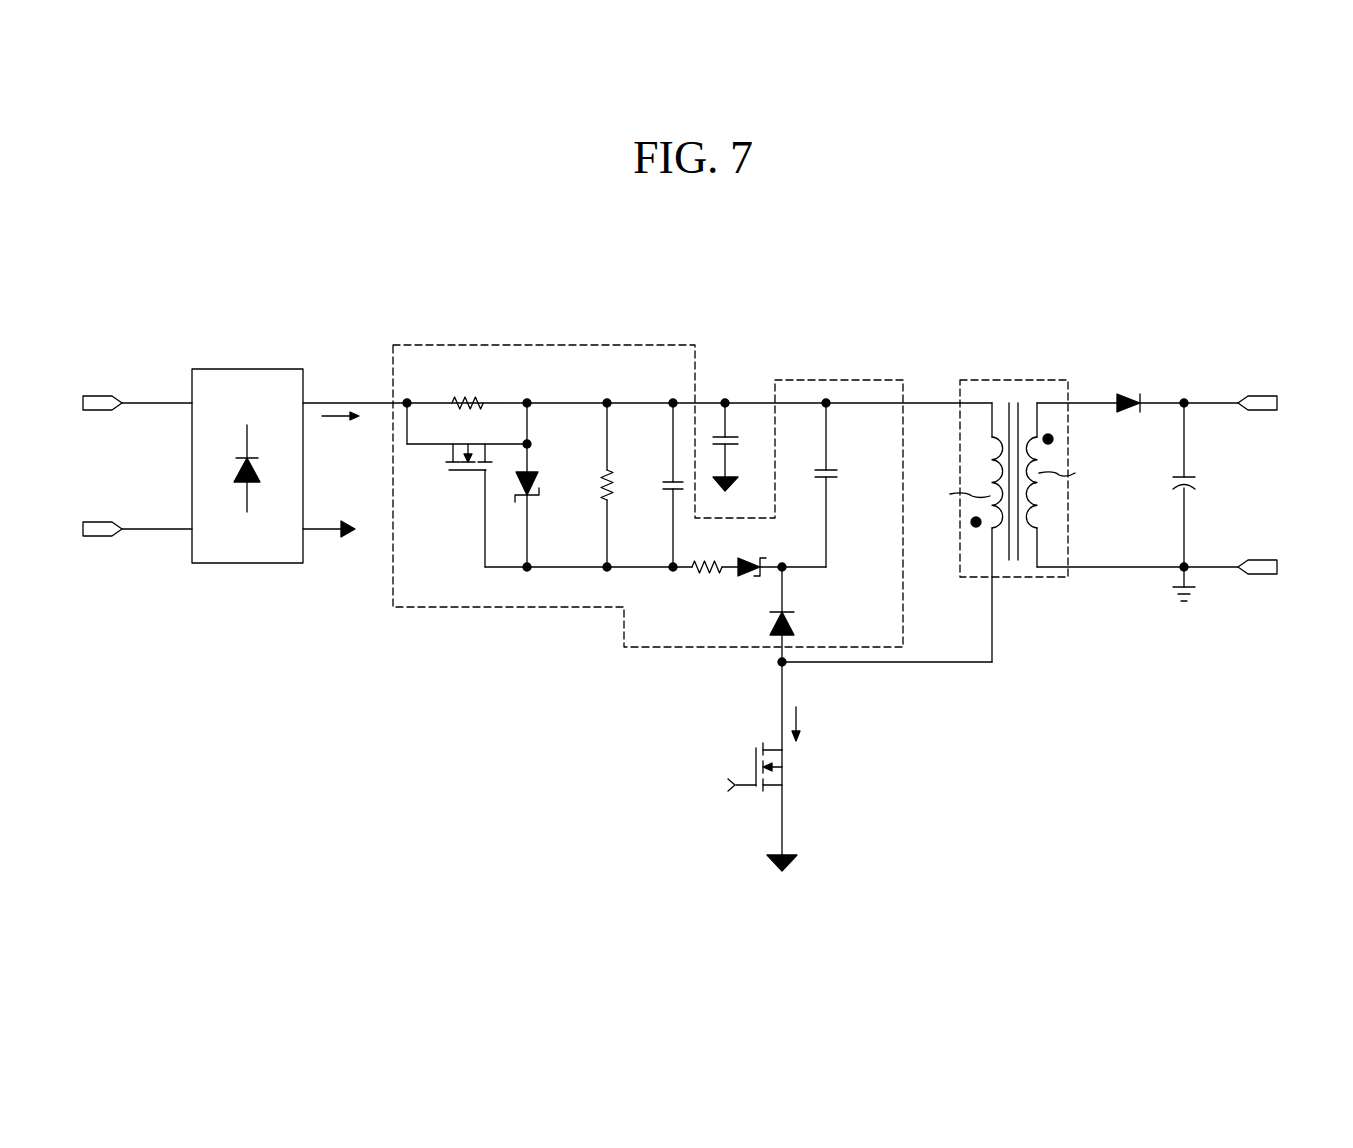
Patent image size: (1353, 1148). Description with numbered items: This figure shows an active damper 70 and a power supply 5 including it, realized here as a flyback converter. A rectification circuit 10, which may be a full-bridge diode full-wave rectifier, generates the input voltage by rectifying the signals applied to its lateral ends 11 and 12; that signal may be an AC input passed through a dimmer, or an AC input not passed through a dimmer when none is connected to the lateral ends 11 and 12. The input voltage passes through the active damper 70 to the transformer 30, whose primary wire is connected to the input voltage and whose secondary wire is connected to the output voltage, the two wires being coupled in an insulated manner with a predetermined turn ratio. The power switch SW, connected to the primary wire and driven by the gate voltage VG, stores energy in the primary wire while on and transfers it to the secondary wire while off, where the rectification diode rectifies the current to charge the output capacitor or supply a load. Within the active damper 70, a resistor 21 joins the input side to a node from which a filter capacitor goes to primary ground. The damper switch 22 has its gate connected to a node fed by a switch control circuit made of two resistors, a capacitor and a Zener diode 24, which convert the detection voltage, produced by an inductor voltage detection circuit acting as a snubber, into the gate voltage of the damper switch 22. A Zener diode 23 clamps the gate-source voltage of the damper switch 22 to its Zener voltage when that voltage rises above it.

The power supply 5 is at (865, 311).
The rectification circuit 10 is at (250, 369).
The lateral end 11 is at (98, 394).
The lateral end 12 is at (98, 522).
The resistor 21 is at (467, 393).
The damper switch 22 is at (462, 472).
The Zener diode 23 is at (538, 470).
The Zener diode 24 is at (755, 578).
The transformer 30 is at (1013, 378).
The active damper 70 is at (521, 345).